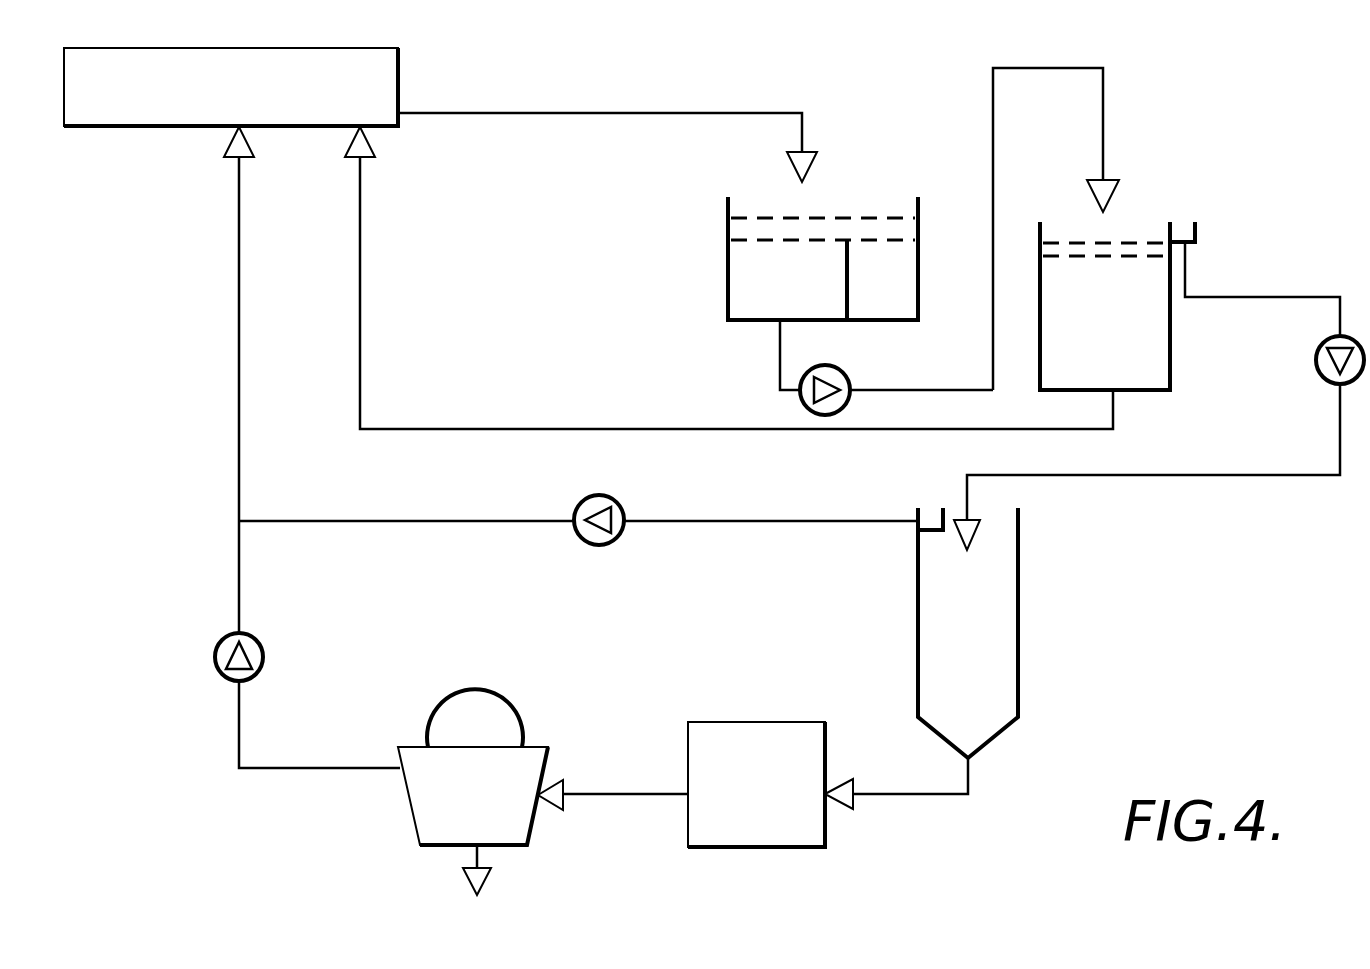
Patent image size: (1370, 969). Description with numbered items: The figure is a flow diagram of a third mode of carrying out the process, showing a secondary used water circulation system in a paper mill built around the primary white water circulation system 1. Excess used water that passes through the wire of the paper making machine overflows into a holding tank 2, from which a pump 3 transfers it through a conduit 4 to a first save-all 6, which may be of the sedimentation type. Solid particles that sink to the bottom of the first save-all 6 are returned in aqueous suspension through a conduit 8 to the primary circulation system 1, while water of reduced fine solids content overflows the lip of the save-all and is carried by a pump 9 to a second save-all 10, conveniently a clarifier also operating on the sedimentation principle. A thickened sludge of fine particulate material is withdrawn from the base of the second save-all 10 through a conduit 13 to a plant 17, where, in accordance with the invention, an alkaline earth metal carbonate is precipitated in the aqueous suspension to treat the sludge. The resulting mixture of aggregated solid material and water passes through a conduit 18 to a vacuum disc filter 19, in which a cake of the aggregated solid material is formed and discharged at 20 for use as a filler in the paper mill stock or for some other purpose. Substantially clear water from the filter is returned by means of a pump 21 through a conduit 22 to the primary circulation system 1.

The primary white water circulation system 1 is at (236, 108).
The holding tank 2 is at (728, 283).
The pump 3 is at (845, 375).
The conduit 4 is at (993, 145).
The first save-all 6 is at (1170, 340).
The conduit 8 is at (557, 429).
The pump 9 is at (1325, 385).
The second save-all 10 is at (1020, 652).
The conduit 13 is at (908, 794).
The plant 17 is at (772, 794).
The conduit 18 is at (607, 792).
The vacuum disc filter 19 is at (515, 702).
The cake discharge 20 is at (480, 855).
The pump 21 is at (262, 652).
The conduit 22 is at (239, 300).